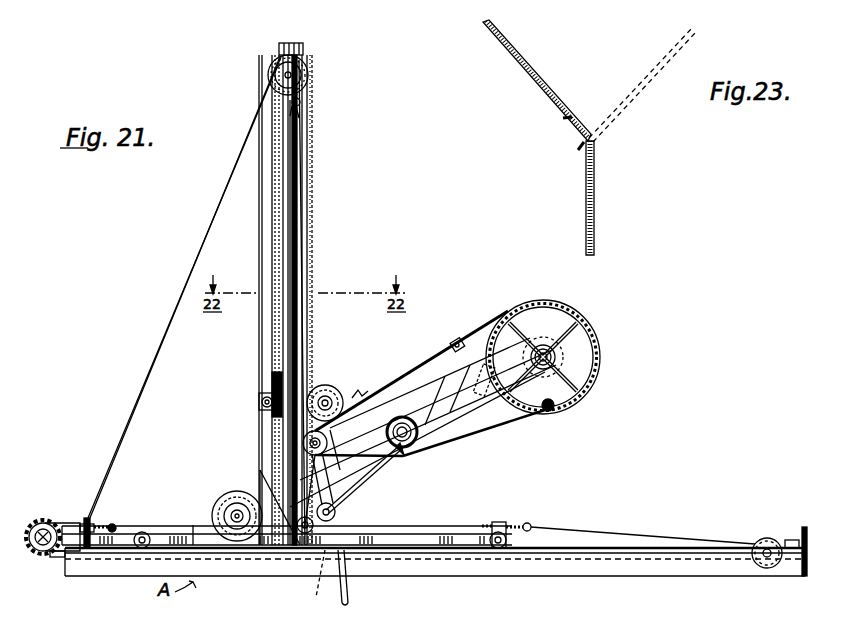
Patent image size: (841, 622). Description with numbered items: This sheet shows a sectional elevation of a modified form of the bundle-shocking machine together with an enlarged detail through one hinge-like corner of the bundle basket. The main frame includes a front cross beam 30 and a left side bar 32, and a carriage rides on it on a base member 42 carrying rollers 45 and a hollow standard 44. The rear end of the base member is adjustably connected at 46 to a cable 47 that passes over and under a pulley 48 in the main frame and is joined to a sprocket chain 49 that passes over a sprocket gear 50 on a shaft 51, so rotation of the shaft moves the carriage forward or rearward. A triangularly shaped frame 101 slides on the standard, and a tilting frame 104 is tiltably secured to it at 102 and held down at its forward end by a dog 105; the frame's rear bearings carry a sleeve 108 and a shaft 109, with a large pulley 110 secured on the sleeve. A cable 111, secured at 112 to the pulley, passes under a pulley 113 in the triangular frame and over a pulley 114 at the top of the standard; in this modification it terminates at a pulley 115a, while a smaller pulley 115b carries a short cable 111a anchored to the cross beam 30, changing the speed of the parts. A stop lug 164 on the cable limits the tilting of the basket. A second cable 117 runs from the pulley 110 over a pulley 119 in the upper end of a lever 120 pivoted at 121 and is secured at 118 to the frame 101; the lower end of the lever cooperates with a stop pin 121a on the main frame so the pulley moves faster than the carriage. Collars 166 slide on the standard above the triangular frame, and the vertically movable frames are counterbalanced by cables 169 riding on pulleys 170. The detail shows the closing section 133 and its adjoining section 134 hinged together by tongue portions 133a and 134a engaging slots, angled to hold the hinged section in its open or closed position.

In FIG. 21, the cable 111 is at (312, 222).
In FIG. 21, the pulley 114 is at (308, 70).
In FIG. 21, the pulleys 170 is at (306, 108).
In FIG. 21, the cables 169 is at (308, 185).
In FIG. 21, the hollow standard 44 is at (297, 330).
In FIG. 21, the collars 166 is at (260, 398).
In FIG. 21, the pulley 113 is at (335, 388).
In FIG. 21, the pulley 119 is at (332, 436).
In FIG. 21, the triangularly shaped frame 101 is at (370, 400).
In FIG. 21, the stop lugs 164 is at (455, 340).
In FIG. 21, the large pulley 110 is at (565, 303).
In FIG. 21, the sleeve 108 is at (590, 338).
In FIG. 21, the shaft 109 is at (552, 357).
In FIG. 21, the cable securing point 112 is at (550, 412).
In FIG. 21, the tilting pivot 102 is at (412, 422).
In FIG. 21, the tilting frame 104 is at (430, 400).
In FIG. 21, the cable 117 is at (478, 420).
In FIG. 21, the cable securing point 118 is at (400, 450).
In FIG. 21, the lever pivot 121 is at (352, 507).
In FIG. 21, the lever 120 is at (332, 525).
In FIG. 21, the stop or pin 121a is at (320, 581).
In FIG. 21, the dogs 105 is at (262, 478).
In FIG. 21, the smaller pulley 115b is at (272, 490).
In FIG. 21, the pulley 115a is at (268, 497).
In FIG. 21, the short cable 111a is at (193, 523).
In FIG. 21, the carriage base member 42 is at (398, 536).
In FIG. 21, the left side bar 32 is at (688, 566).
In FIG. 21, the sprocket gears 50 is at (38, 520).
In FIG. 21, the shaft 51 is at (43, 545).
In FIG. 21, the sprocket chains 49 is at (58, 557).
In FIG. 21, the front cross beam 30 is at (90, 518).
In FIG. 21, the rollers 45 is at (142, 532).
In FIG. 21, the adjustable connection 46 is at (530, 523).
In FIG. 21, the cable 47 is at (610, 531).
In FIG. 21, the pulley 48 is at (767, 538).
In FIG. 23, the cover or closing section 133 is at (532, 73).
In FIG. 23, the basket section 134 is at (595, 173).
In FIG. 23, the tongue portion 134a is at (567, 120).
In FIG. 23, the tongue portion 133a is at (580, 148).